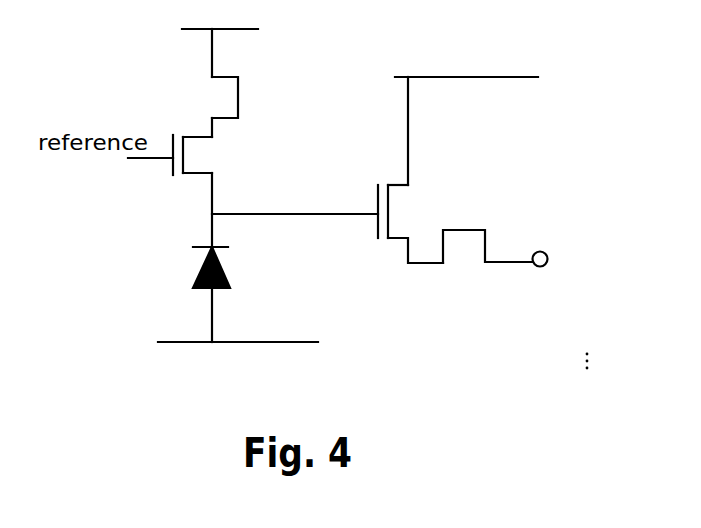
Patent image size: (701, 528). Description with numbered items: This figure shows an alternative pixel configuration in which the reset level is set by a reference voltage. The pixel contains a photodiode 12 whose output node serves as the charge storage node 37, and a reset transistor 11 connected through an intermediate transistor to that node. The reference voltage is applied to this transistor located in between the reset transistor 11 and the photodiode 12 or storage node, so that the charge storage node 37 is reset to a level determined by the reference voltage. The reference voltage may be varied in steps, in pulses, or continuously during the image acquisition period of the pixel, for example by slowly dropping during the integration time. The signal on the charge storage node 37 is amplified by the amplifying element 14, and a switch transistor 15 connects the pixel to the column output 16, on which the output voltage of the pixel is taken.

The reset transistor 11 is at (249, 120).
The charge storage node 37 is at (295, 197).
The photodiode 12 is at (183, 271).
The amplifying element 14 is at (376, 228).
The switch transistor 15 is at (487, 220).
The column output 16 is at (546, 283).